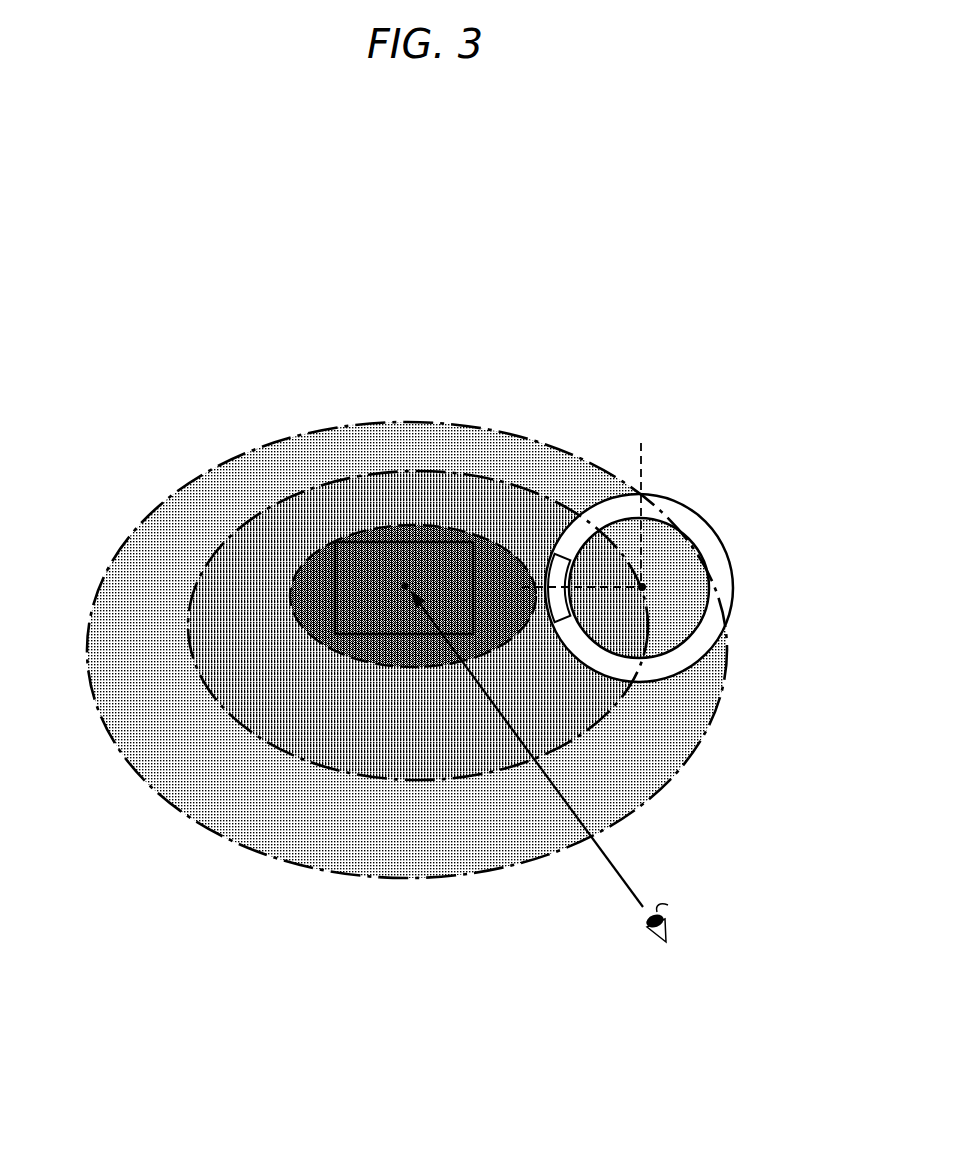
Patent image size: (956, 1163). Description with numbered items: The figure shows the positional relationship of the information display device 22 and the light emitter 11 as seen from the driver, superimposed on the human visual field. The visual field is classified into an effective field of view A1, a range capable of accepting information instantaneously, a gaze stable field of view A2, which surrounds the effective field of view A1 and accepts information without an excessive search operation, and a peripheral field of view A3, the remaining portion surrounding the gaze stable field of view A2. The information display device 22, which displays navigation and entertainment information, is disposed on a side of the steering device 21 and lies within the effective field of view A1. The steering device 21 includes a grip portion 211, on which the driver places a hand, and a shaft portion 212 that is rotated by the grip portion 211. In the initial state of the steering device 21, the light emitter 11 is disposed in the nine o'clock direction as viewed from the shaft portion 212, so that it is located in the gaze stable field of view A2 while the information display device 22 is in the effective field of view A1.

The effective field of view A1 is at (507, 547).
The gaze stable field of view A2 is at (212, 695).
The peripheral field of view A3 is at (217, 832).
The light emitter 11 is at (553, 560).
The information display device 22 is at (357, 581).
The steering device 21 is at (686, 562).
The grip portion 211 is at (702, 538).
The shaft portion 212 is at (650, 592).